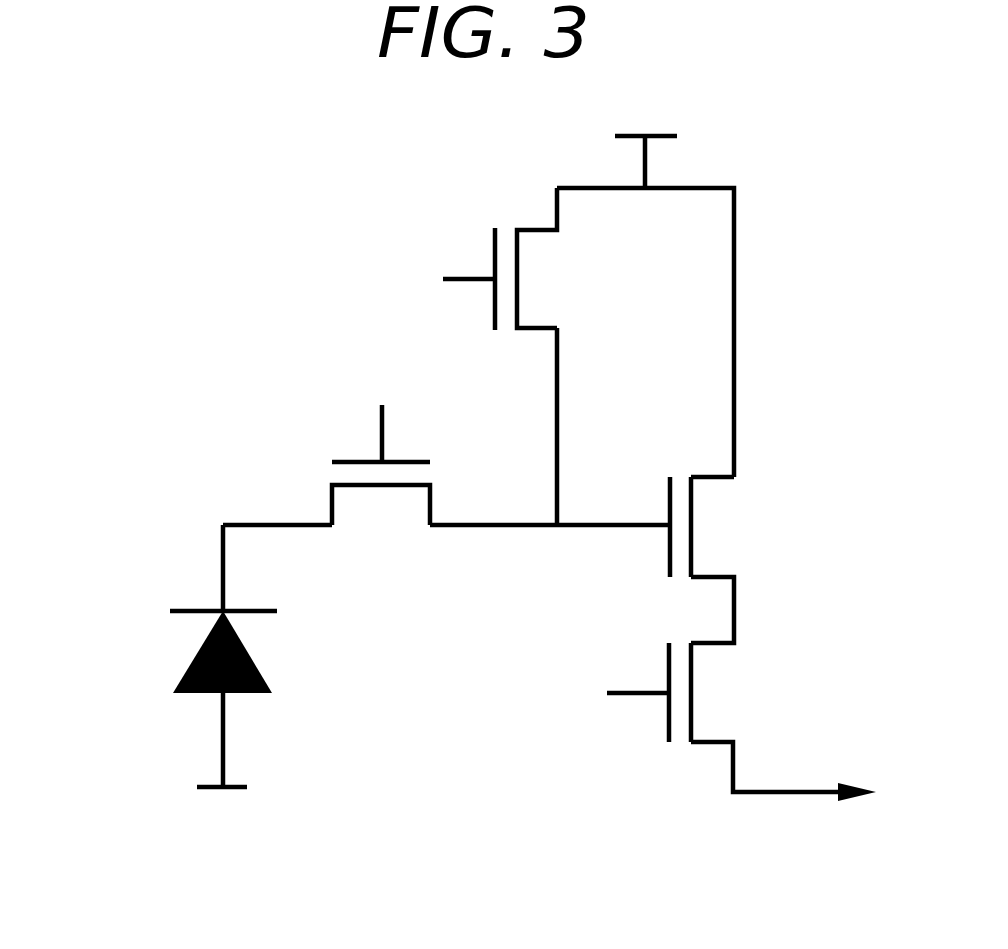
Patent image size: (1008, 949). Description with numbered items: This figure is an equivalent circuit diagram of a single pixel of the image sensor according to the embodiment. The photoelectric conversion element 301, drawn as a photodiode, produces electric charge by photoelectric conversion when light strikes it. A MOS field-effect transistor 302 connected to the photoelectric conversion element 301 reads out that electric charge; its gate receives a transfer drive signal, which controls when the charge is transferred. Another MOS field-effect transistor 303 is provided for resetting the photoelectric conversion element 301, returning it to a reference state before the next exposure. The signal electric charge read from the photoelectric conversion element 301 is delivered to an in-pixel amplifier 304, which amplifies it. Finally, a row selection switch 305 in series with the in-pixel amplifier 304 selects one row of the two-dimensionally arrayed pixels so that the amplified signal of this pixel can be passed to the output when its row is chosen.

The photoelectric conversion element 301 is at (190, 666).
The MOS field-effect transistor 302 is at (383, 510).
The MOS field-effect transistor 303 is at (540, 281).
The in-pixel amplifier 304 is at (717, 529).
The row selection switch 305 is at (717, 695).